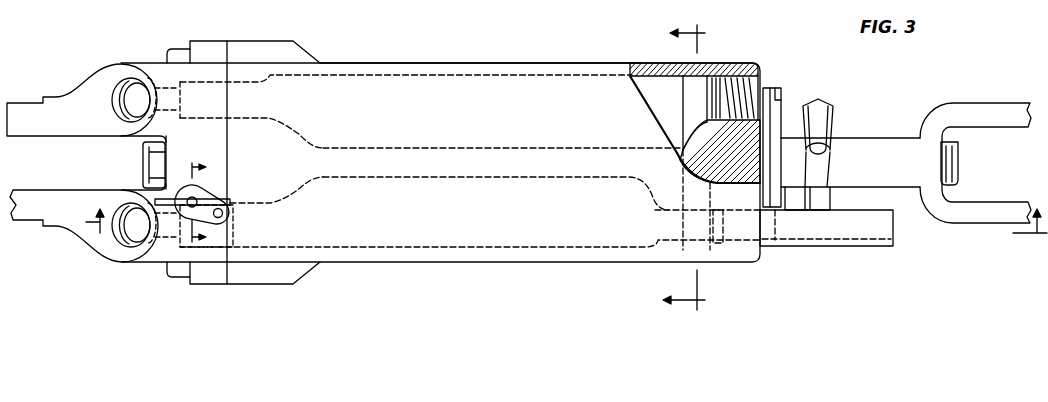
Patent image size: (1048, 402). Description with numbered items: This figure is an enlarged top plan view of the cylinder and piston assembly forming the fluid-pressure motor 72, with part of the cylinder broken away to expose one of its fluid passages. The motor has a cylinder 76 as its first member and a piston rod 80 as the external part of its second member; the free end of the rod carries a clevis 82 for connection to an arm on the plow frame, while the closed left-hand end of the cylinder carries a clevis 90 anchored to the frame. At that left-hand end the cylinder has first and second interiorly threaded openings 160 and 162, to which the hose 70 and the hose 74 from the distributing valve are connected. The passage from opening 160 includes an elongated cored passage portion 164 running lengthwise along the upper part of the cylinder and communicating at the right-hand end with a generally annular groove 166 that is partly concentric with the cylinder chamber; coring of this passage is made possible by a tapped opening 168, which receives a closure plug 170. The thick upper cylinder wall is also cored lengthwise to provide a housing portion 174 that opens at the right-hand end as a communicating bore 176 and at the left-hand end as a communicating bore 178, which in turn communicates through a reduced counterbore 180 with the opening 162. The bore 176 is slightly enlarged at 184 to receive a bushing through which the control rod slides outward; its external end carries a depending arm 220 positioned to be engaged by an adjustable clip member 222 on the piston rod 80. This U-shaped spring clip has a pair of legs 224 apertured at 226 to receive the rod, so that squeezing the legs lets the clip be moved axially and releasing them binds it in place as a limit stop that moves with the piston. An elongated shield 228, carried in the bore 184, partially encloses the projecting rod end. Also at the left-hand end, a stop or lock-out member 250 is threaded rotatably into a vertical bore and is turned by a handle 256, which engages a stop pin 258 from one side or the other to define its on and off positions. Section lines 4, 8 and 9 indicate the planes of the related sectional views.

The section line 4- 4 is at (558, 237).
The section line 8- 8 is at (691, 168).
The section line 9- 9 is at (189, 202).
The hose 70 is at (133, 68).
The fluid-pressure motor 72 is at (541, 268).
The hose 74 is at (138, 258).
The cylinder 76 is at (412, 63).
The piston rod 80 is at (881, 138).
The clevis 82 is at (992, 107).
The clevis 90 is at (57, 98).
The threaded opening 160 is at (115, 107).
The threaded opening 162 is at (118, 212).
The cored passage portion 164 is at (647, 78).
The annular groove 166 is at (697, 82).
The opening 168 is at (717, 92).
The closure plug 170 is at (772, 92).
The housing portion 174 is at (422, 250).
The communicating bore 176 is at (716, 242).
The communicating bore 178 is at (190, 249).
The reduced counterbore 180 is at (168, 247).
The enlarged bore 184 is at (748, 203).
The depending arm 220 is at (809, 198).
The adjustable clip member 222 is at (831, 203).
The legs 224 is at (820, 101).
The apertures 226 is at (831, 164).
The shield 228 is at (793, 234).
The lock-out member 250 is at (194, 198).
The handle 256 is at (212, 203).
The stop pin 258 is at (222, 215).